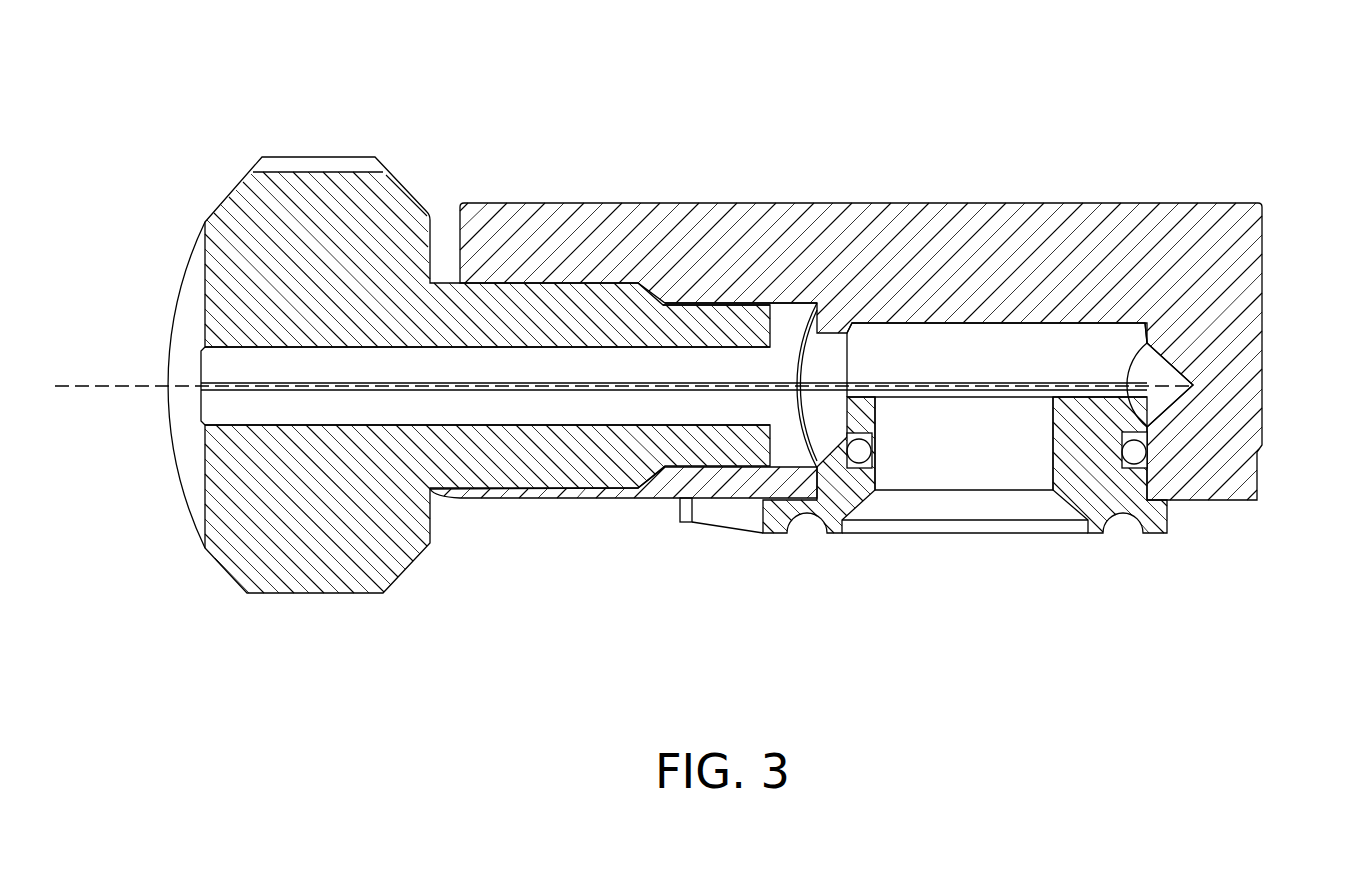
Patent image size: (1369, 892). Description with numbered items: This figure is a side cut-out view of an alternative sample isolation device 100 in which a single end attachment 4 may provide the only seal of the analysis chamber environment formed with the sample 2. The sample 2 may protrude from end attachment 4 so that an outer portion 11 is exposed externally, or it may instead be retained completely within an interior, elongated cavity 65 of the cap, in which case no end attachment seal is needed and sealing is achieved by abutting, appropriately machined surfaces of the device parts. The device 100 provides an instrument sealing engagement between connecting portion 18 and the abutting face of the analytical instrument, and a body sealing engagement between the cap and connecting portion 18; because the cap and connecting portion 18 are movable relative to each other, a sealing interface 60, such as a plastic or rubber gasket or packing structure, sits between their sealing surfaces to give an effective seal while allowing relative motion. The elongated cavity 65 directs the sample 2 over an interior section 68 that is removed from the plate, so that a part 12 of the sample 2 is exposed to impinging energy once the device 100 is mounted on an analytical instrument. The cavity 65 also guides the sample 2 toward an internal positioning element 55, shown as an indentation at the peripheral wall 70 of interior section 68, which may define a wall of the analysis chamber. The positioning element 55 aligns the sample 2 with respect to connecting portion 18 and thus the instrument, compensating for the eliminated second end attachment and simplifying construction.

The device 100 is at (228, 138).
The outer portion 11 is at (82, 385).
The end attachment 4 is at (168, 387).
The interior, elongated cavity 65 is at (297, 427).
The sample 2 is at (543, 390).
The sealing interface 60 is at (716, 303).
The connecting portion 18 is at (922, 203).
The part 12 is at (1077, 387).
The peripheral wall 70 is at (1147, 331).
The internal positioning element 55 is at (1180, 380).
The interior section 68 is at (957, 528).